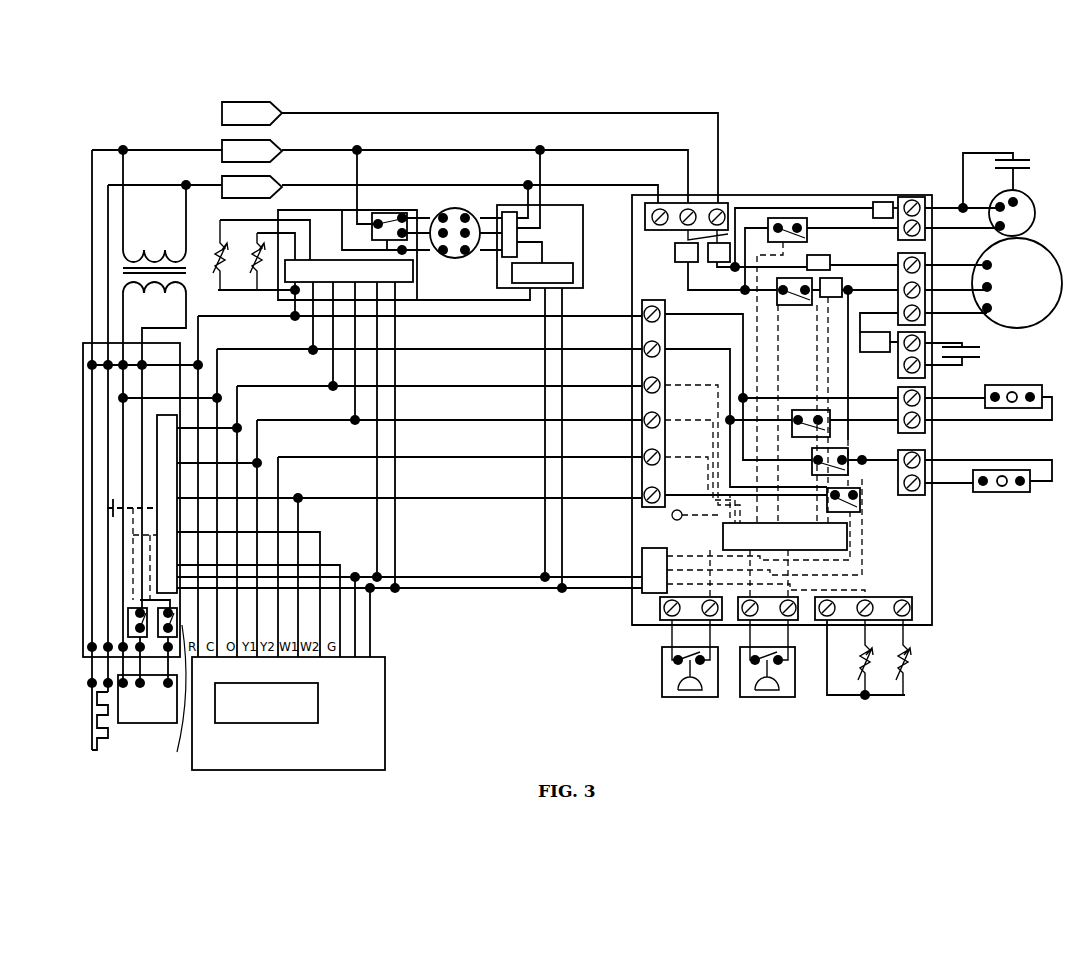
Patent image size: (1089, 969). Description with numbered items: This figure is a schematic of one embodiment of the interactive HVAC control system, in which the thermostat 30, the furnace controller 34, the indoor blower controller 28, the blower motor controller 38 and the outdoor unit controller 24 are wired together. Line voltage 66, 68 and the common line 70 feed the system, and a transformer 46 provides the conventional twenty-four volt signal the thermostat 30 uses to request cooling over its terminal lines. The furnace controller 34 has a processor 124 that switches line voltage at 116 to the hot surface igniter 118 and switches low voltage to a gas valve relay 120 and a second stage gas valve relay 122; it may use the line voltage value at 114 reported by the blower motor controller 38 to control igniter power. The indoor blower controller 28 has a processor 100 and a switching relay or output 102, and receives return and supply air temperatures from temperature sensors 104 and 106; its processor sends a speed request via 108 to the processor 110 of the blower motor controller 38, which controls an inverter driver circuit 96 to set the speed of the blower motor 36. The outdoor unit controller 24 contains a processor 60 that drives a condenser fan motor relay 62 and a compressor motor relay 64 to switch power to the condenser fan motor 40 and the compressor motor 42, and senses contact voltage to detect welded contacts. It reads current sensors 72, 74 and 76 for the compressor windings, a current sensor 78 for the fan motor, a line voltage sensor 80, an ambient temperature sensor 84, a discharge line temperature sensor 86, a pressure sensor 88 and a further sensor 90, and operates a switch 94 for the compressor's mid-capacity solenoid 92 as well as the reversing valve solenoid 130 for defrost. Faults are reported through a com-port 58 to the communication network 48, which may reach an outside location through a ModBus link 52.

The outdoor unit controller 24 is at (932, 605).
The indoor blower controller 28 is at (417, 210).
The thermostat 30 is at (395, 690).
The furnace controller 34 is at (93, 343).
The blower motor 36 is at (460, 208).
The blower motor controller 38 is at (583, 205).
The condenser fan motor 40 is at (1028, 200).
The compressor motor 42 is at (1035, 245).
The transformer 46 is at (123, 297).
The communication network 48 is at (622, 590).
The ModBus link 52 is at (672, 517).
The com-port 58 is at (648, 596).
The processor 60 is at (847, 538).
The condenser fan motor relay 62 is at (780, 218).
The compressor motor relay 64 is at (795, 278).
The line voltage 66 is at (222, 110).
The line voltage 68 is at (222, 143).
The common line 70 is at (222, 181).
The current sensor 72 is at (820, 255).
The current sensor 74 is at (838, 278).
The current sensor 76 is at (890, 338).
The current sensor 78 is at (883, 202).
The line voltage sensor 80 is at (733, 238).
The temperature sensor 84 is at (908, 682).
The temperature sensor 86 is at (870, 682).
The pressure sensor 88 is at (755, 697).
The sensor 90 is at (672, 697).
The mid-capacity solenoid 92 is at (998, 385).
The switch 94 is at (830, 428).
The inverter driver circuit 96 is at (520, 237).
The processor 100 is at (326, 260).
The output signal relay 102 is at (390, 213).
The temperature sensor 104 is at (215, 245).
The temperature sensor 106 is at (256, 243).
The pulse-width-modulating signal line 108 is at (437, 300).
The processor 110 is at (557, 263).
The line voltage value 114 is at (357, 175).
The igniter line voltage switch 116 is at (108, 506).
The hot surface igniter 118 is at (108, 750).
The gas valve relay 120 is at (176, 702).
The second stage gas valve relay 122 is at (128, 614).
The processor 124 is at (155, 485).
The reversing valve solenoid 130 is at (990, 495).